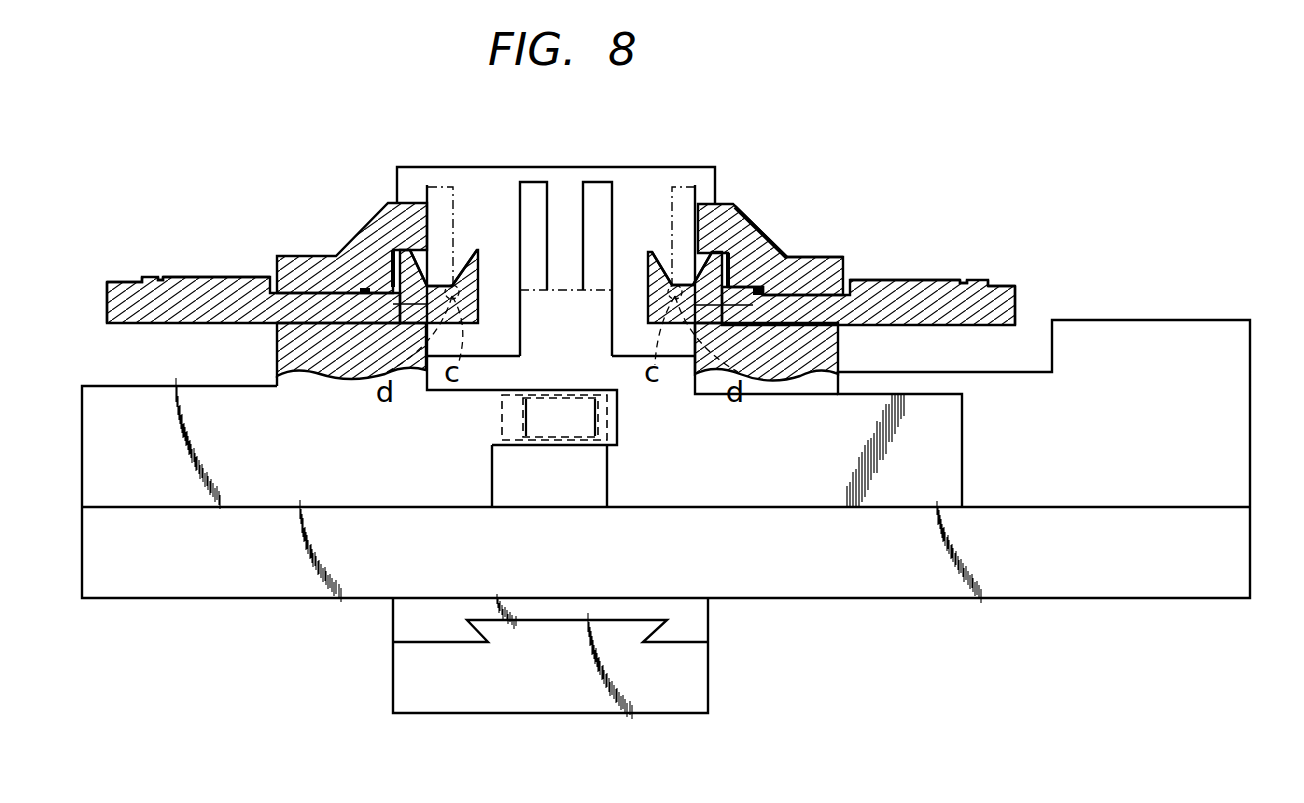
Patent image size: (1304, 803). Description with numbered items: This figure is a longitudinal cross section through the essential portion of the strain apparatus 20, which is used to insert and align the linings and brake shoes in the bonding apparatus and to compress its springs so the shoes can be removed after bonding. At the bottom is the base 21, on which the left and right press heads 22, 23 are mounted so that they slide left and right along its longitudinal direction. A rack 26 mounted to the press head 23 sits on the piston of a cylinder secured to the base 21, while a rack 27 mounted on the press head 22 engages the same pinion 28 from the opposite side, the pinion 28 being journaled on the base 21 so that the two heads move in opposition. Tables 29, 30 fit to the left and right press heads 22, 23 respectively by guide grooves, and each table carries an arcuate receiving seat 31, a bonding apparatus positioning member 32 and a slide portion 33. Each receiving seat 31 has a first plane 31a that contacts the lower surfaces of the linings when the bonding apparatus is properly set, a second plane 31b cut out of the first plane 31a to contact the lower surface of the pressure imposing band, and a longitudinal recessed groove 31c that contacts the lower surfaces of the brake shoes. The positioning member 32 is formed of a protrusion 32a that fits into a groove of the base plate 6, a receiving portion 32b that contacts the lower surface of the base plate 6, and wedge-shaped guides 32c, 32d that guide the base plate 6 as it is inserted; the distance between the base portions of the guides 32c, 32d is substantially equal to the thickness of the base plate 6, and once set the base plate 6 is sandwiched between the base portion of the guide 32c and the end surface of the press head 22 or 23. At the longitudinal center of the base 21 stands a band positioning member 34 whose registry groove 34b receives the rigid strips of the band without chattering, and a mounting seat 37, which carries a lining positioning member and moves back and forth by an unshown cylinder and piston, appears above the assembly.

The base plate 6 is at (432, 186).
The strain apparatus 20 is at (820, 250).
The base 21 is at (1130, 338).
The press head 22 is at (390, 213).
The press head 23 is at (730, 222).
The rack 26 is at (530, 443).
The rack 27 is at (518, 388).
The pinion 28 is at (612, 403).
The table 29 is at (211, 272).
The table 30 is at (907, 275).
The arcuate receiving seat 31 is at (182, 288).
The first plane 31a is at (145, 275).
The second plane 31b is at (120, 279).
The longitudinal recessed groove 31c is at (160, 275).
The bonding apparatus positioning member 32 is at (481, 280).
The protrusion 32a is at (445, 262).
The receiving portion 32b is at (458, 296).
The wedge-shaped guide 32c is at (443, 282).
The wedge-shaped guide 32d is at (390, 238).
The slide portion 33 is at (285, 276).
The band positioning member 34 is at (602, 168).
The registry groove 34b is at (580, 196).
The mounting seat 37 is at (705, 178).